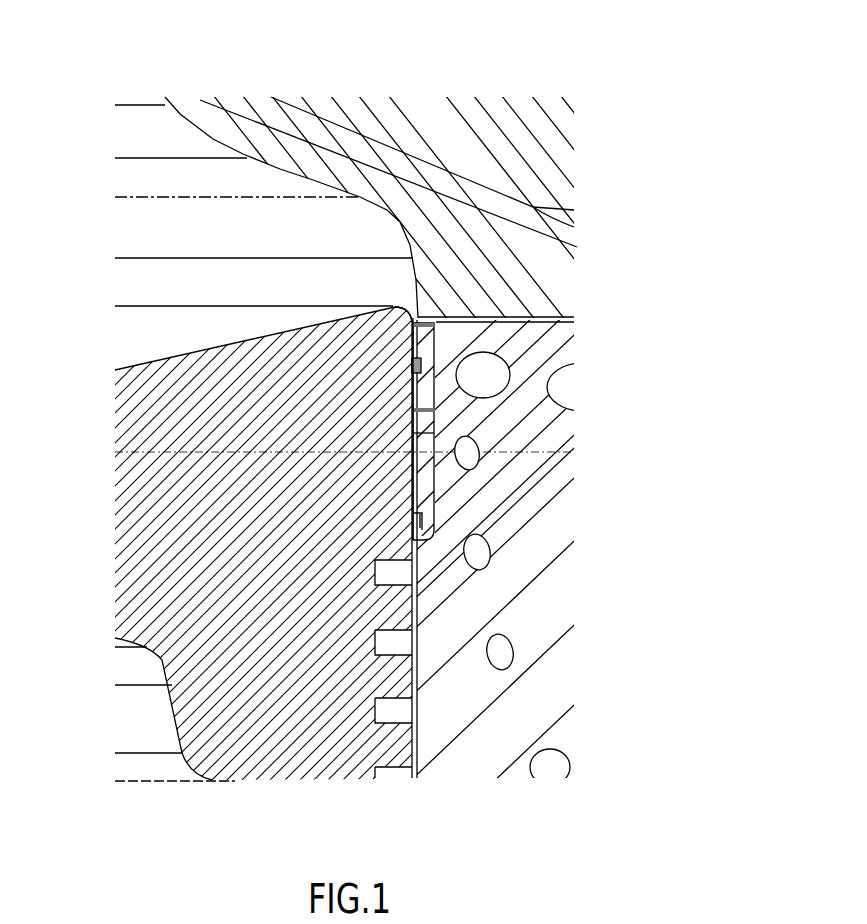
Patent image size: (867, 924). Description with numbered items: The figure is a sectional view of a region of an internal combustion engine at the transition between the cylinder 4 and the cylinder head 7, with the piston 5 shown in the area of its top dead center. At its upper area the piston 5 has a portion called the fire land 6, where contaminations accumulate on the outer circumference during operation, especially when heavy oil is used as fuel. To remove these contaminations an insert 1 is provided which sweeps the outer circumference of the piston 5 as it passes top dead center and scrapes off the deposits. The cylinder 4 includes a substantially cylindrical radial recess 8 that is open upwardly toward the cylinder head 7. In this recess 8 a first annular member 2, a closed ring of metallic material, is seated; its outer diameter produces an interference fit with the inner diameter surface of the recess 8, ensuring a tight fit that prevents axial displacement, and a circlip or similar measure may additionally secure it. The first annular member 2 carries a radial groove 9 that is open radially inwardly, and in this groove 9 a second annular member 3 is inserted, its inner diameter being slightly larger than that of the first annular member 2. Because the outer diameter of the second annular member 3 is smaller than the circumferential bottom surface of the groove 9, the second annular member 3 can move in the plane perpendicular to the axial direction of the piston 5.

The insert 1 is at (371, 392).
The first annular member 2 is at (422, 347).
The second annular member 3 is at (421, 372).
The cylinder 4 is at (532, 415).
The piston 5 is at (293, 492).
The fire land 6 is at (383, 315).
The cylinder head 7 is at (454, 245).
The radial recess 8 is at (412, 410).
The radial groove 9 is at (412, 362).